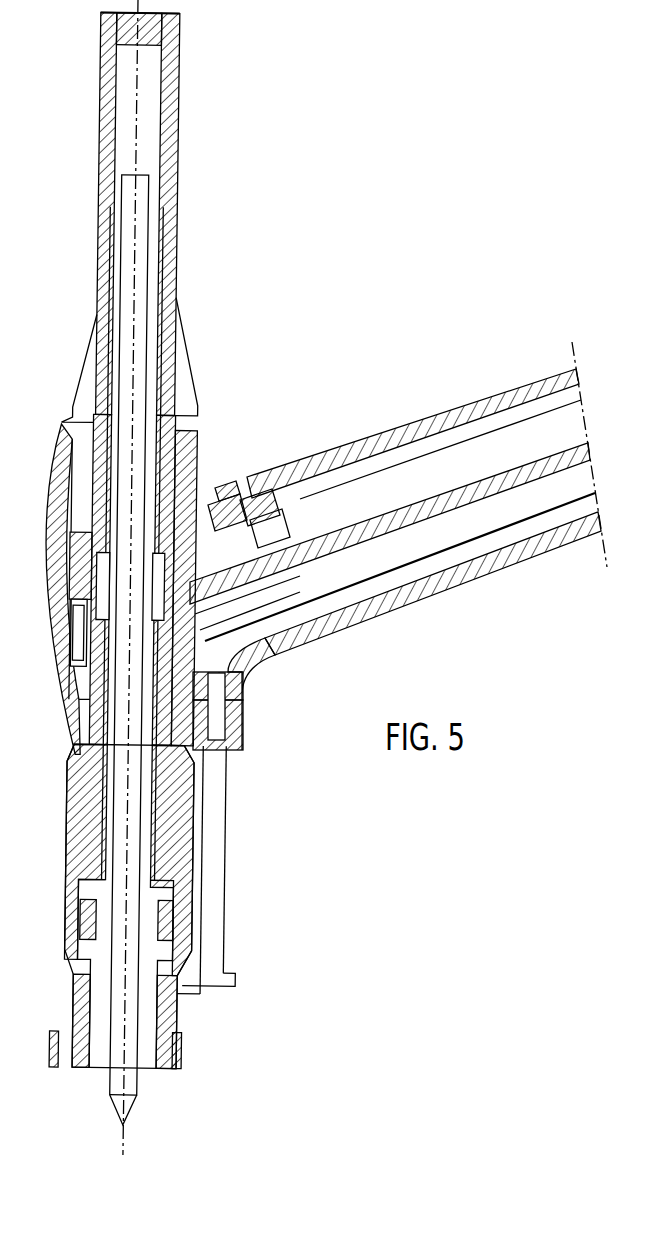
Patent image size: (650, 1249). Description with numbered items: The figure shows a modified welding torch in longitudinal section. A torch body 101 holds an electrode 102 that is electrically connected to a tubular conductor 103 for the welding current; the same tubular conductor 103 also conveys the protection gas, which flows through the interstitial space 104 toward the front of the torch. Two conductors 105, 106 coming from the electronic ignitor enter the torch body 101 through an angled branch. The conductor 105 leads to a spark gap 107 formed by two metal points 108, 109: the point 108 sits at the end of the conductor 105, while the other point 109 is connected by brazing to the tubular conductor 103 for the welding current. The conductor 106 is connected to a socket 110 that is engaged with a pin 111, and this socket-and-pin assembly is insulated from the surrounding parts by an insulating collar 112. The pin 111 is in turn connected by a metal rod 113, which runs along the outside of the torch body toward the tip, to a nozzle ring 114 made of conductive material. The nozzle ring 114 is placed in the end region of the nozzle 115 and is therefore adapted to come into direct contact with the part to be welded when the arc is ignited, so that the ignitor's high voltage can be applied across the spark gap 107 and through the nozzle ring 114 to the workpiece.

The torch body 101 is at (215, 413).
The electrode 102 is at (118, 1019).
The tubular conductor 103 is at (273, 533).
The interstitial space 104 is at (150, 813).
The conductor 105 is at (355, 468).
The conductor 106 is at (357, 594).
The spark gap 107 is at (247, 471).
The metal point 108 is at (258, 490).
The metal point 109 is at (226, 492).
The socket 110 is at (228, 676).
The pin 111 is at (213, 741).
The insulating collar 112 is at (237, 717).
The metal rod 113 is at (213, 800).
The nozzle ring 114 is at (175, 1055).
The nozzle 115 is at (165, 1013).